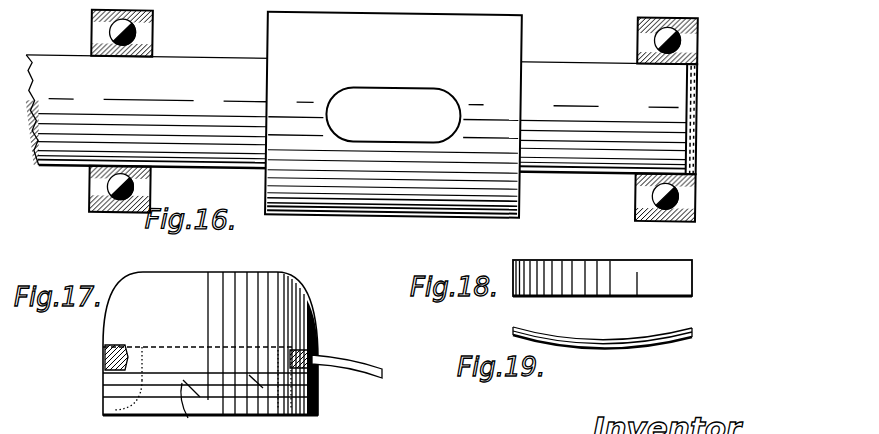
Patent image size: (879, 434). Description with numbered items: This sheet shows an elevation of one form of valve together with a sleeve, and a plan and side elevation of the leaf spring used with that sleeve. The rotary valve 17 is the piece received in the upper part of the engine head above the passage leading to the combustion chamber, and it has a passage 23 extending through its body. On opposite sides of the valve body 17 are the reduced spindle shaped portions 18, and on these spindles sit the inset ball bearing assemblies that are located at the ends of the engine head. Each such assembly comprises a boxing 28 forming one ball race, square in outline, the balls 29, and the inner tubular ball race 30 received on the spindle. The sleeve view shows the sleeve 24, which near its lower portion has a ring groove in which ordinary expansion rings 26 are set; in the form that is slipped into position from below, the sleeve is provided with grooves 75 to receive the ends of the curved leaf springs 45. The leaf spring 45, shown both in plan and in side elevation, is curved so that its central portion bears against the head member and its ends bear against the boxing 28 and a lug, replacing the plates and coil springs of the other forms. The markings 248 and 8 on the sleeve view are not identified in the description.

In FIG. 16, the rotary valve 17 is at (393, 115).
In FIG. 16, the reduced spindle shaped portions 18 is at (361, 114).
In FIG. 16, the passage 23 is at (393, 115).
In FIG. 16, the boxing 28 is at (153, 13).
In FIG. 16, the balls 29 is at (638, 34).
In FIG. 16, the inner tubular ball race 30 is at (638, 181).
In FIG. 17, the cylinder 248 is at (210, 343).
In FIG. 17, the sleeve 24 is at (210, 343).
In FIG. 17, the cylinder section 8 is at (232, 318).
In FIG. 17, the grooves 75 is at (104, 358).
In FIG. 17, the expansion rings 26 is at (195, 408).
In FIG. 17, the curved leaf springs 45 is at (352, 366).
In FIG. 18, the curved leaf springs 45 is at (637, 288).
In FIG. 19, the curved leaf springs 45 is at (557, 338).